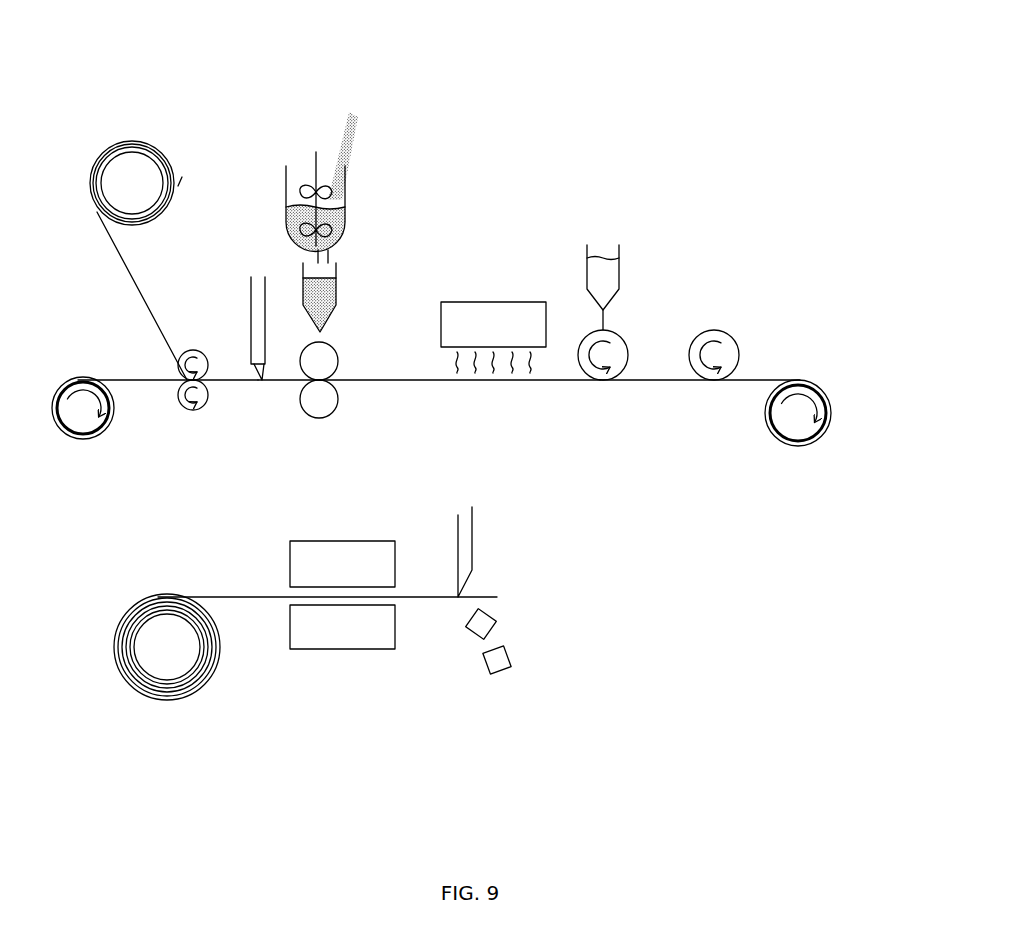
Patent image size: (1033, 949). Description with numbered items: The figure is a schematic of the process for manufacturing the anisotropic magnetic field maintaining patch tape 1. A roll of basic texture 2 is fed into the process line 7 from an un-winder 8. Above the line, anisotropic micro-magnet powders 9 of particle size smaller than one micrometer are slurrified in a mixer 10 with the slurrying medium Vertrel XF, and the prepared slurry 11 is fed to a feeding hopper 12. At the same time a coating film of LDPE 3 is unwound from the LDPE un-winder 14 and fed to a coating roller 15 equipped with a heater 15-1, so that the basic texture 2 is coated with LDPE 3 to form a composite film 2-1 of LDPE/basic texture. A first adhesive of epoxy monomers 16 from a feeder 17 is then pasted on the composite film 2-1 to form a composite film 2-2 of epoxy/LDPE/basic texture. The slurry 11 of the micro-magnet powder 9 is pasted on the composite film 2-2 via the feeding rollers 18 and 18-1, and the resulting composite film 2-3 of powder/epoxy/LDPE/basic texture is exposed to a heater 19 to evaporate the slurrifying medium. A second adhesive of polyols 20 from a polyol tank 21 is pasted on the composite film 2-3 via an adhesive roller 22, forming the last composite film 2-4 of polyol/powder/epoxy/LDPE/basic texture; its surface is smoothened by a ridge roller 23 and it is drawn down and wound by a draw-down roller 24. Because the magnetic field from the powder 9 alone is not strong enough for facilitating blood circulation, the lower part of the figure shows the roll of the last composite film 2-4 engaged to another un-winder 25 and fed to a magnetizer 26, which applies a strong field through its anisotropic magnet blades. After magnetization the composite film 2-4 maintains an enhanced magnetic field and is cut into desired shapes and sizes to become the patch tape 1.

The anisotropic magnetic field maintaining patch tape 1 is at (478, 627).
The basic texture 2 is at (107, 380).
The composite film of LDPE/basic texture 2-1 is at (215, 383).
The composite film of Epoxy/LDPE/basic texture 2-2 is at (285, 382).
The composite film of anisotropic micro-magnet powder/Epoxy/LDPE/basic texture 2-3 is at (430, 382).
The composite film of polyol/anisotropic micro-magnet powder/Epoxy/LDPE/basic textur 2-4 is at (657, 382).
The coating film of LDPE 3 is at (143, 292).
The process line 7 is at (728, 115).
The un-winder 8 is at (78, 428).
The anisotropic micro-magnet powders 9 is at (340, 134).
The mixer 10 is at (344, 213).
The slurry 11 is at (330, 284).
The feeding hopper 12 is at (334, 299).
The LDPE un-winder 14 is at (148, 165).
The coating roller 15 is at (195, 350).
The heater 15-1 is at (195, 408).
The first adhesive of epoxy monomers 16 is at (263, 378).
The feeder 17 is at (256, 304).
The feeding roller 18 is at (330, 355).
The feeding roller 18-1 is at (325, 400).
The heater 19 is at (514, 306).
The second adhesive of polyols 20 is at (603, 312).
The polyol tank 21 is at (620, 253).
The adhesive roller 22 is at (626, 349).
The ridge roller 23 is at (738, 347).
The draw-down roller 24 is at (824, 433).
The un-winder 25 is at (172, 670).
The magnetizer 26 is at (388, 557).